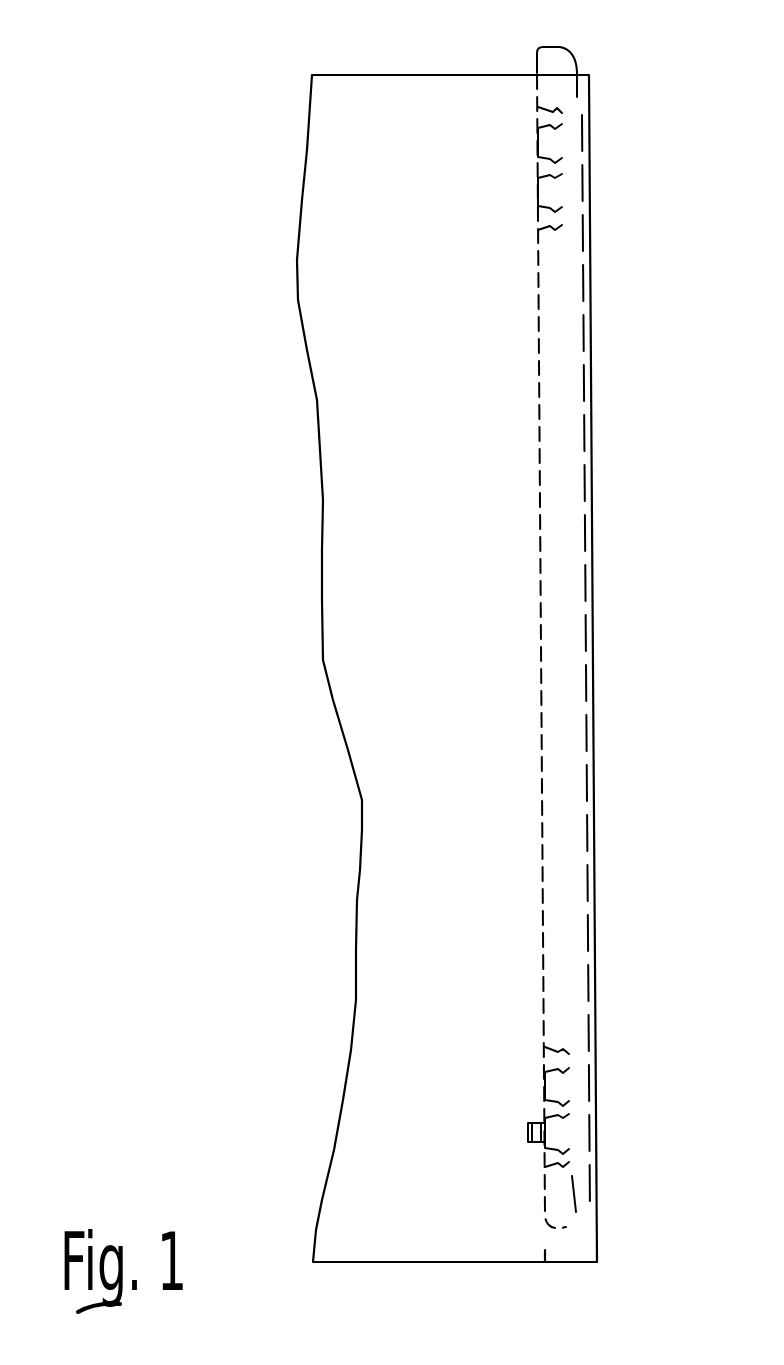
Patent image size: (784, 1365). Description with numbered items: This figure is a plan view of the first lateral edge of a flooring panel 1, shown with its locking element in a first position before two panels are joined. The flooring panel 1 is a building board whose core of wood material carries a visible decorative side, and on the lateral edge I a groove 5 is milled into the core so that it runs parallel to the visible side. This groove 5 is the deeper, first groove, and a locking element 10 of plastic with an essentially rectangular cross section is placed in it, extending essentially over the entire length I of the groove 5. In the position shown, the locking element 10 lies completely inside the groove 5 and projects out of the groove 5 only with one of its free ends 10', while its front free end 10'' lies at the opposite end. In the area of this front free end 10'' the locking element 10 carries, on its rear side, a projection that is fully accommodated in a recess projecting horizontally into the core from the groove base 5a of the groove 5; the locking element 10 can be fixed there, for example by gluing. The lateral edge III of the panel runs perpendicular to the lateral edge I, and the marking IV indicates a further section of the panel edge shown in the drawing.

The flooring panel 1 is at (430, 178).
The locking element 10 is at (595, 651).
The free end of locking element 10' is at (608, 58).
The front free end of locking element 10'' is at (628, 1163).
The groove 5 is at (578, 1242).
The groove base 5a is at (548, 1248).
The section line IV is at (433, 66).
The lateral edge I is at (610, 335).
The lateral edge III is at (458, 1278).